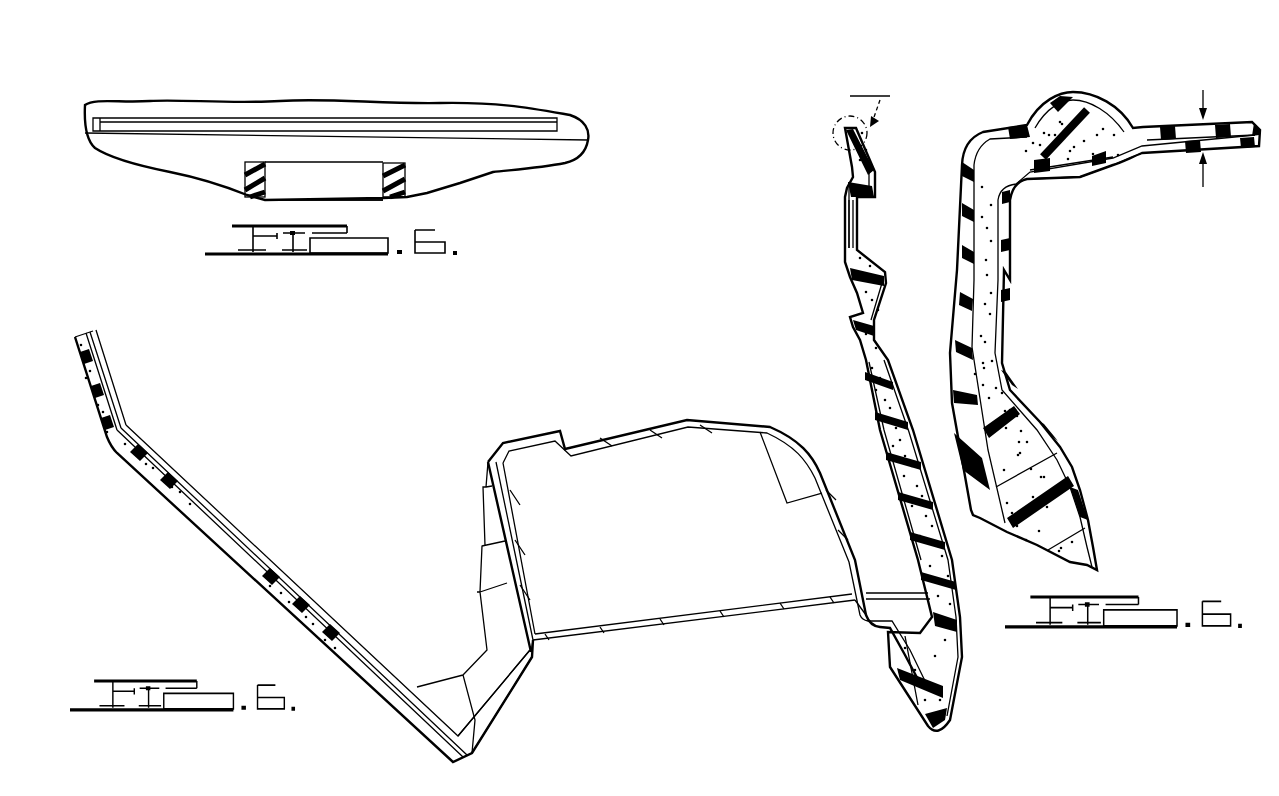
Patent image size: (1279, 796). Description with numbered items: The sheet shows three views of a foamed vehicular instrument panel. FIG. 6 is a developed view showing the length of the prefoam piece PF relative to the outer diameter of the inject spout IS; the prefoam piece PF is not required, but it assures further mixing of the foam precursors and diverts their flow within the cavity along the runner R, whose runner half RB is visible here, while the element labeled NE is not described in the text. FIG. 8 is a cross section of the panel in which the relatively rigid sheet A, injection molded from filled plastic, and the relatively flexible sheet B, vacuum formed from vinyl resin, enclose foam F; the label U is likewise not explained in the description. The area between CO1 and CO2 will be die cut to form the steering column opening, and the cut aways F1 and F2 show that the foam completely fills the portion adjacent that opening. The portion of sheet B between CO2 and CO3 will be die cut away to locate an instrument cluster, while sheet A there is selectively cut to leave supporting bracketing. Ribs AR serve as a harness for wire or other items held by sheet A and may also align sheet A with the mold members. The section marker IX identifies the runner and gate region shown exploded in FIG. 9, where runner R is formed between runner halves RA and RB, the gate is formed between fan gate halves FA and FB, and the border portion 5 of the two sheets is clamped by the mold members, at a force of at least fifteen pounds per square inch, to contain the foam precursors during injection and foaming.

In FIG. 6, the runner R is at (202, 145).
In FIG. 9, the runner R is at (1099, 90).
In FIG. 6, the prefoam piece PF is at (325, 127).
In FIG. 6, the inject spout IS is at (280, 173).
In FIG. 6, the neck NE is at (407, 183).
In FIG. 6, the runner half RB is at (413, 152).
In FIG. 9, the runner half RB is at (1083, 167).
In FIG. 8, the unit U is at (83, 328).
In FIG. 8, the cut location CO1 is at (92, 333).
In FIG. 8, the cut away F2 is at (125, 427).
In FIG. 8, the cut away F1 is at (302, 592).
In FIG. 8, the ribs AR is at (480, 598).
In FIG. 8, the cut location CO2 is at (537, 638).
In FIG. 8, the sheet B is at (700, 617).
In FIG. 8, the cut location CO3 is at (852, 602).
In FIG. 8, the foam F is at (868, 340).
In FIG. 9, the foam F is at (1017, 442).
In FIG. 8, the sheet A is at (868, 378).
In FIG. 9, the section IX is at (861, 107).
In FIG. 9, the fan gate half FA is at (995, 137).
In FIG. 9, the runner half RA is at (1057, 100).
In FIG. 9, the border portion 5 is at (1219, 94).
In FIG. 9, the fan gate half FB is at (1030, 178).